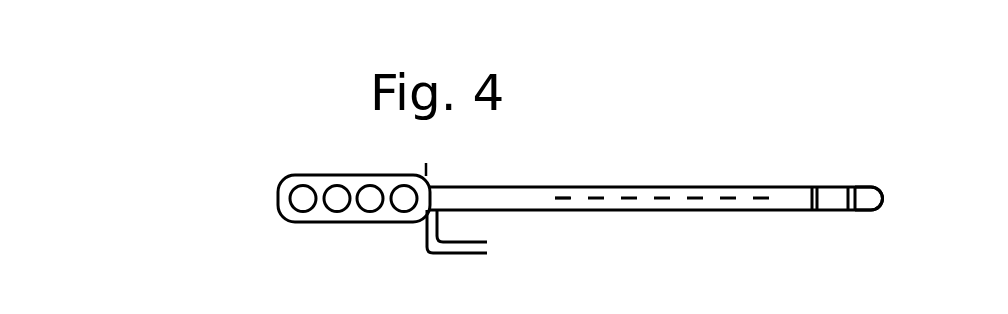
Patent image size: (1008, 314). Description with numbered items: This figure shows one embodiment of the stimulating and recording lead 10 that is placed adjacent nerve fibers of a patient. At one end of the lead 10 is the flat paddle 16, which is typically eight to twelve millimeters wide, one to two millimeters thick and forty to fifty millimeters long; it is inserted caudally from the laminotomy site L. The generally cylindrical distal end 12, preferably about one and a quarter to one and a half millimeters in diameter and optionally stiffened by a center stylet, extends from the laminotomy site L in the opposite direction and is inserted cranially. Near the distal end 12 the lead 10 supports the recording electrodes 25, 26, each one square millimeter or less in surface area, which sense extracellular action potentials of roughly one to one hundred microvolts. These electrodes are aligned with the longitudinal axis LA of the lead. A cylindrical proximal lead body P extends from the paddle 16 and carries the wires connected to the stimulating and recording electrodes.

The stimulating and recording lead 10 is at (597, 178).
The flat paddle 16 is at (332, 174).
The cylindrical proximal lead body P is at (453, 256).
The recording electrode 26 is at (812, 186).
The recording electrode 25 is at (854, 186).
The distal end 12 is at (833, 212).
The laminotomy site L is at (426, 135).
The longitudinal axis LA is at (563, 198).